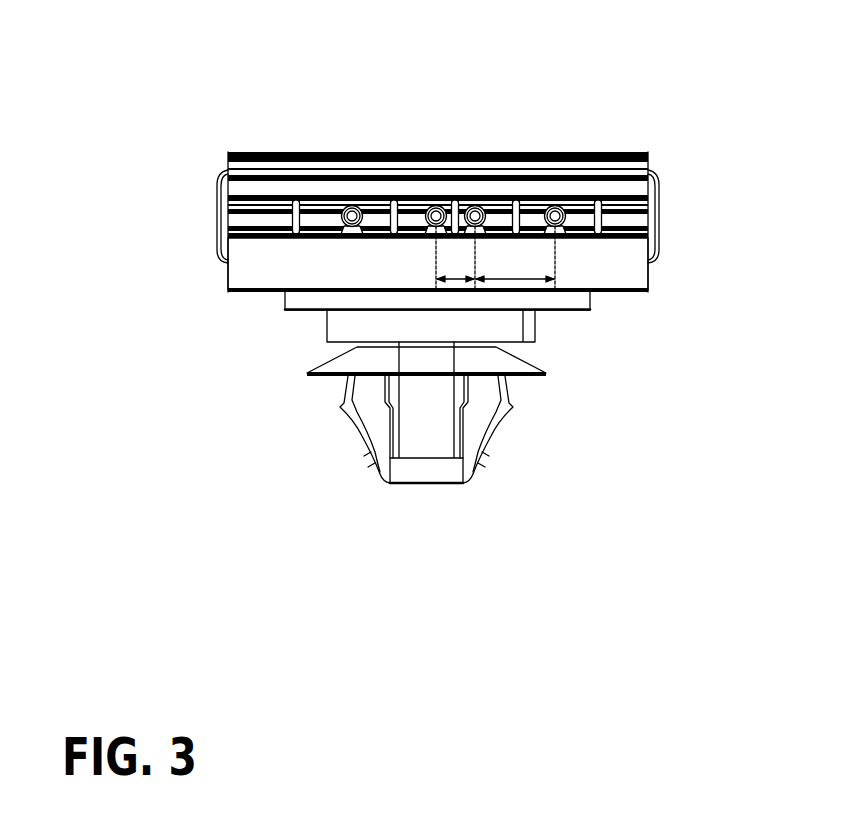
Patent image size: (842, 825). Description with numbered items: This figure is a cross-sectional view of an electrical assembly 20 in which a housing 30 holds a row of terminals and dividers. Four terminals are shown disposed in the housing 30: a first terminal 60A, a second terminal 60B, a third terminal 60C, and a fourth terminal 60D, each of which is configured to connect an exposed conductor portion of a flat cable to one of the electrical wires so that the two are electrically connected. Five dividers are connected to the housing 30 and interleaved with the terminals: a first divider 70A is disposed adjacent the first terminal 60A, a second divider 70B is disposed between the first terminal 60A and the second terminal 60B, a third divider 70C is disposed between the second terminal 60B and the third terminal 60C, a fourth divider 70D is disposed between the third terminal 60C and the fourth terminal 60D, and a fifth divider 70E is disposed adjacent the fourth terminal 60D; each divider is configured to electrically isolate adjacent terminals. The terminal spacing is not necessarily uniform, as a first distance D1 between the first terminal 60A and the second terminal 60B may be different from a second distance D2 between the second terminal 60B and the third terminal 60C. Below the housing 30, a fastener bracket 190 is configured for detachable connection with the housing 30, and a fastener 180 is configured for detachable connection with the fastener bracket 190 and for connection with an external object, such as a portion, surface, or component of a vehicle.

The electrical assembly 20 is at (128, 120).
The housing 30 is at (632, 152).
The first terminal 60A is at (558, 207).
The second terminal 60B is at (480, 207).
The third terminal 60C is at (436, 206).
The fourth terminal 60D is at (348, 207).
The first divider 70A is at (598, 200).
The second divider 70B is at (516, 200).
The third divider 70C is at (455, 200).
The fourth divider 70D is at (394, 200).
The fifth divider 70E is at (296, 200).
The fastener 180 is at (348, 417).
The fastener bracket 190 is at (286, 300).
The first distance D1 is at (503, 283).
The second distance D2 is at (455, 283).